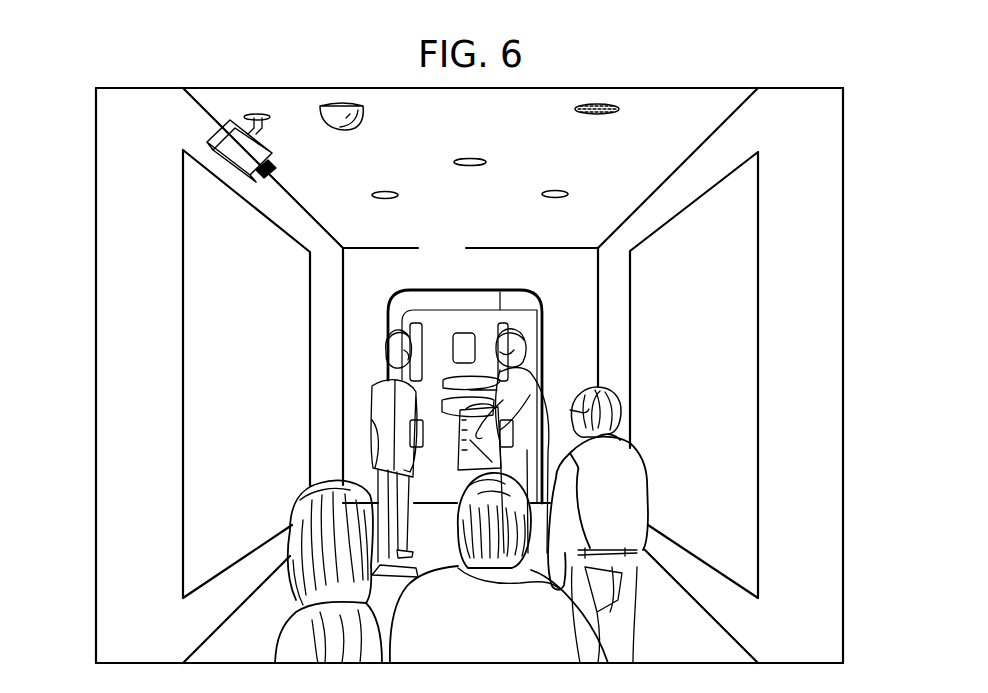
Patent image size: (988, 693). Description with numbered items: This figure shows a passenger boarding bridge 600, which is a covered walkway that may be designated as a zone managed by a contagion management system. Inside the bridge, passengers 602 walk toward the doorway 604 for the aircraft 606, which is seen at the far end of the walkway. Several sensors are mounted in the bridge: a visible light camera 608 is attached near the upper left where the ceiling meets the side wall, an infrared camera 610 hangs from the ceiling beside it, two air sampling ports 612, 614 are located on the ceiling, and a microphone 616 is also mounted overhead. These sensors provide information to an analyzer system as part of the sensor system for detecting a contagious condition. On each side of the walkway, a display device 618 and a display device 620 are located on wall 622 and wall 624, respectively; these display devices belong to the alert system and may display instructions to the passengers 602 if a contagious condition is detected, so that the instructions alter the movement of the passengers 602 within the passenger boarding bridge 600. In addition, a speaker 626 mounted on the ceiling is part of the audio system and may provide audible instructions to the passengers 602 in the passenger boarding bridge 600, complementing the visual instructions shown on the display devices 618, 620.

The passenger boarding bridge 600 is at (373, 65).
The passengers 602 is at (648, 466).
The doorway 604 is at (453, 298).
The aircraft 606 is at (500, 247).
The visible light camera 608 is at (243, 180).
The infrared camera 610 is at (338, 132).
The air sampling port 612 is at (470, 158).
The air sampling port 614 is at (555, 190).
The microphone 616 is at (387, 190).
The display device 618 is at (190, 351).
The display device 620 is at (751, 351).
The wall 622 is at (104, 396).
The wall 624 is at (835, 394).
The speaker 626 is at (603, 115).